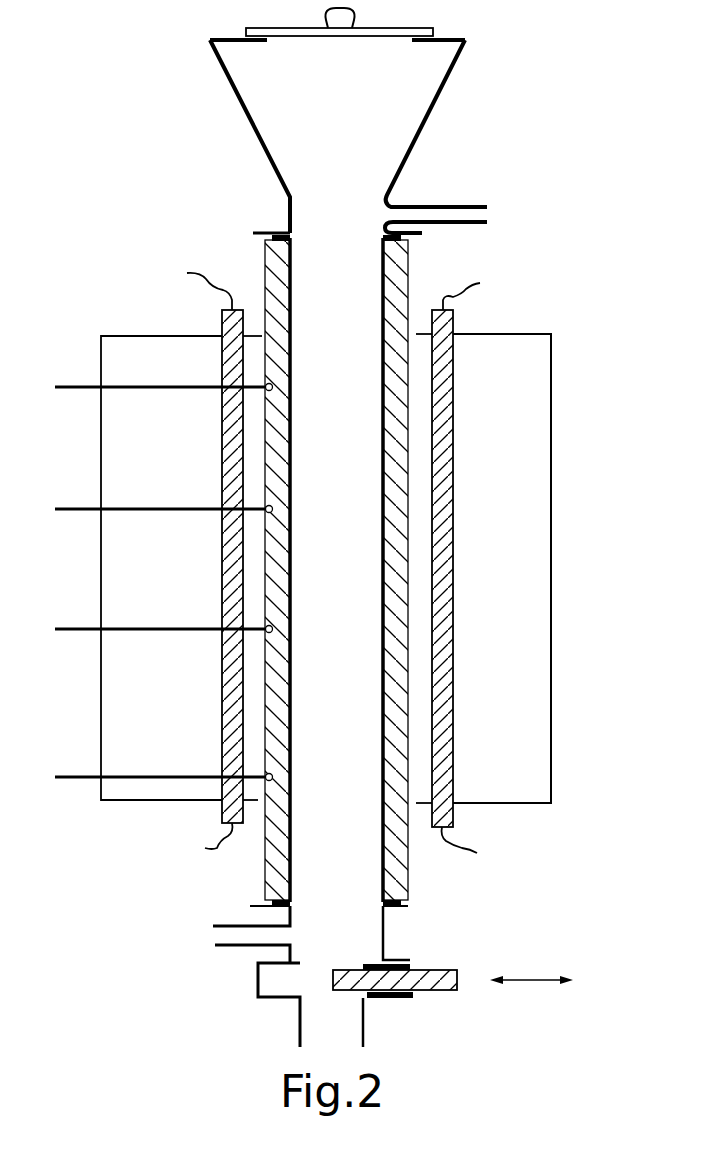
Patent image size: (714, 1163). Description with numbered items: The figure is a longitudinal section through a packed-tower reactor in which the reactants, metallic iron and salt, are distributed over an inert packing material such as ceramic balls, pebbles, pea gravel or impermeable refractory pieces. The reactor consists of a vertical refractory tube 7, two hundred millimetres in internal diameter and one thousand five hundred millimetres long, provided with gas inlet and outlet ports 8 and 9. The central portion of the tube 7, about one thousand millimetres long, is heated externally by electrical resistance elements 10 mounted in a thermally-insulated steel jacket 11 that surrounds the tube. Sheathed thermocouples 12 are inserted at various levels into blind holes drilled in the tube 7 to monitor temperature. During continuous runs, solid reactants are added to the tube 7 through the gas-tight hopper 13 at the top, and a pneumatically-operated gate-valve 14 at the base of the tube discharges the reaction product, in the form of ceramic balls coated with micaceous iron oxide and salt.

The vertical refractory tube 7 is at (263, 257).
The gas port 8 is at (227, 935).
The gas port 9 is at (452, 213).
The electrical resistance elements 10 is at (455, 492).
The thermally-insulated steel jacket 11 is at (552, 617).
The sheathed thermocouples 12 is at (72, 388).
The gas-tight hopper 13 is at (277, 139).
The pneumatically-operated gate-valve 14 is at (437, 970).